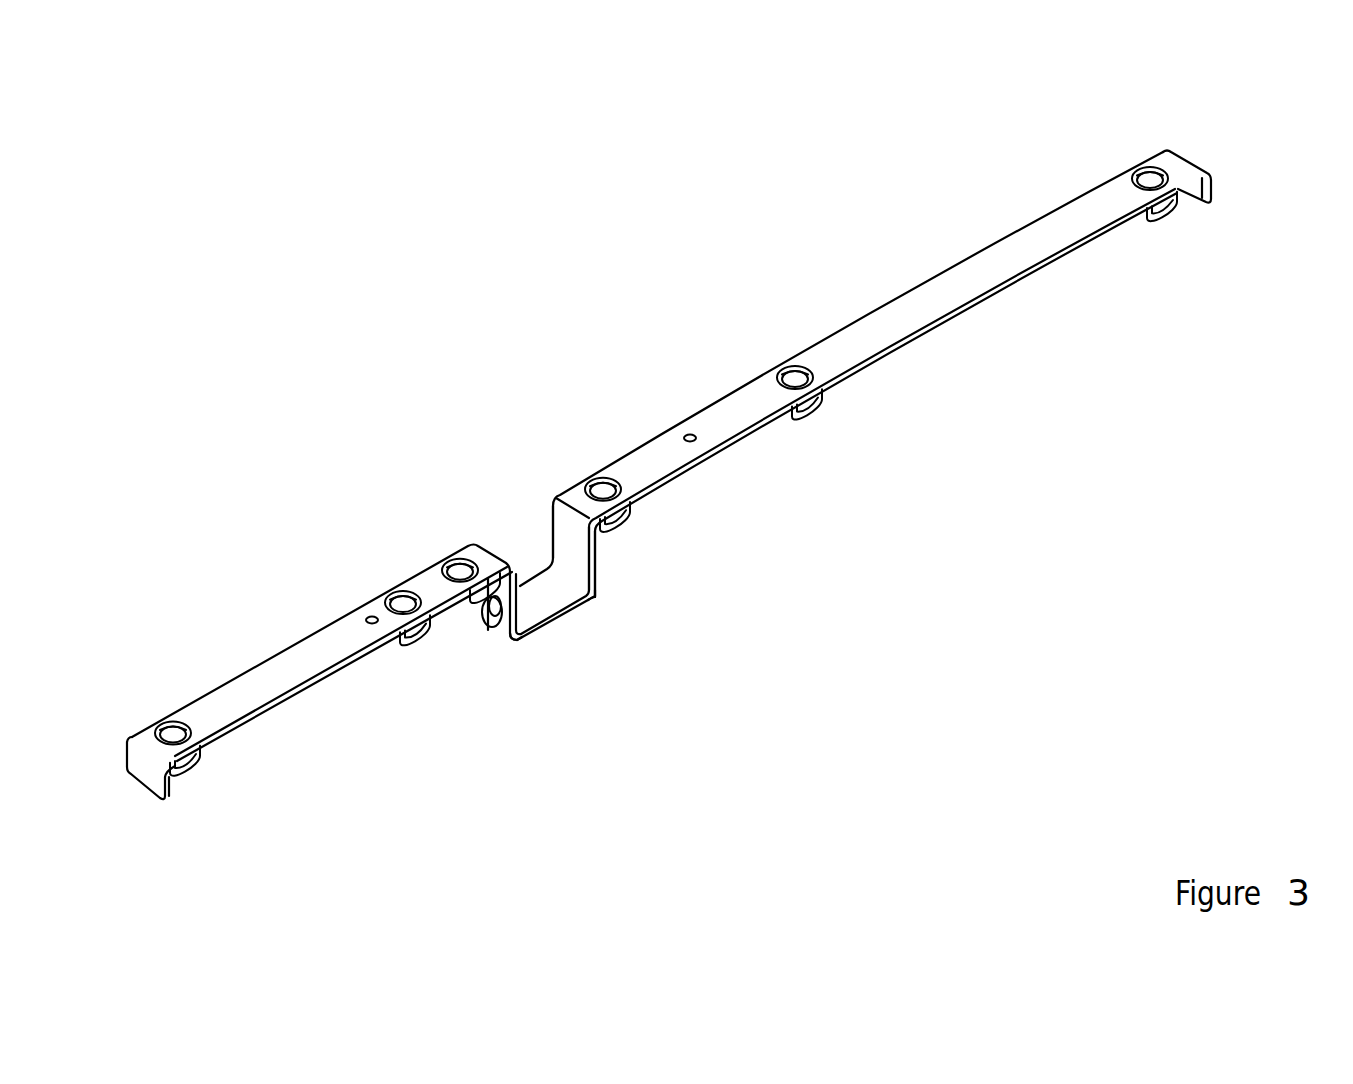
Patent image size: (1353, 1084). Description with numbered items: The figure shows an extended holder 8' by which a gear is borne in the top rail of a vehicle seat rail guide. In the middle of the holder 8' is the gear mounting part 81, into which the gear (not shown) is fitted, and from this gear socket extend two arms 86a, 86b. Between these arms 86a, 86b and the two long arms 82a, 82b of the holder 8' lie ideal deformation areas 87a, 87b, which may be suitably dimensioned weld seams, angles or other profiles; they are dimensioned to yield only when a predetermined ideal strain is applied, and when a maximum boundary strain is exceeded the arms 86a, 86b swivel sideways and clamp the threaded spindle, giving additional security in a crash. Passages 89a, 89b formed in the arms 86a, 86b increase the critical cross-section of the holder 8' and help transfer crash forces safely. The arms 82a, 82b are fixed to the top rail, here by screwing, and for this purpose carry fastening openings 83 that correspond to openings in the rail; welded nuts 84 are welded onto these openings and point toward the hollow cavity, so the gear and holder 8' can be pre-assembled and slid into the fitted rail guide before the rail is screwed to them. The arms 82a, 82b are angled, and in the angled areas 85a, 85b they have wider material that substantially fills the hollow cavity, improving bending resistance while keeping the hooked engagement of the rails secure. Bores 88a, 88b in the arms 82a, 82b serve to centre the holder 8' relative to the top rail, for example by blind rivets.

The holder 8' is at (579, 307).
The gear mounting part 81 is at (547, 608).
The arm 82a is at (273, 677).
The arm 82b is at (913, 316).
The fastening openings 83 is at (1142, 167).
The welded nuts 84 is at (1162, 205).
The angled area 85a is at (123, 755).
The angled area 85b is at (1212, 188).
The arm of the gear holder 86a is at (600, 578).
The arm of the gear holder 86b is at (517, 638).
The ideal deformation area 87a is at (485, 600).
The ideal deformation area 87b is at (596, 578).
The bore 88a is at (370, 616).
The bore 88b is at (688, 434).
The passage 89a is at (483, 613).
The passage 89b is at (553, 543).